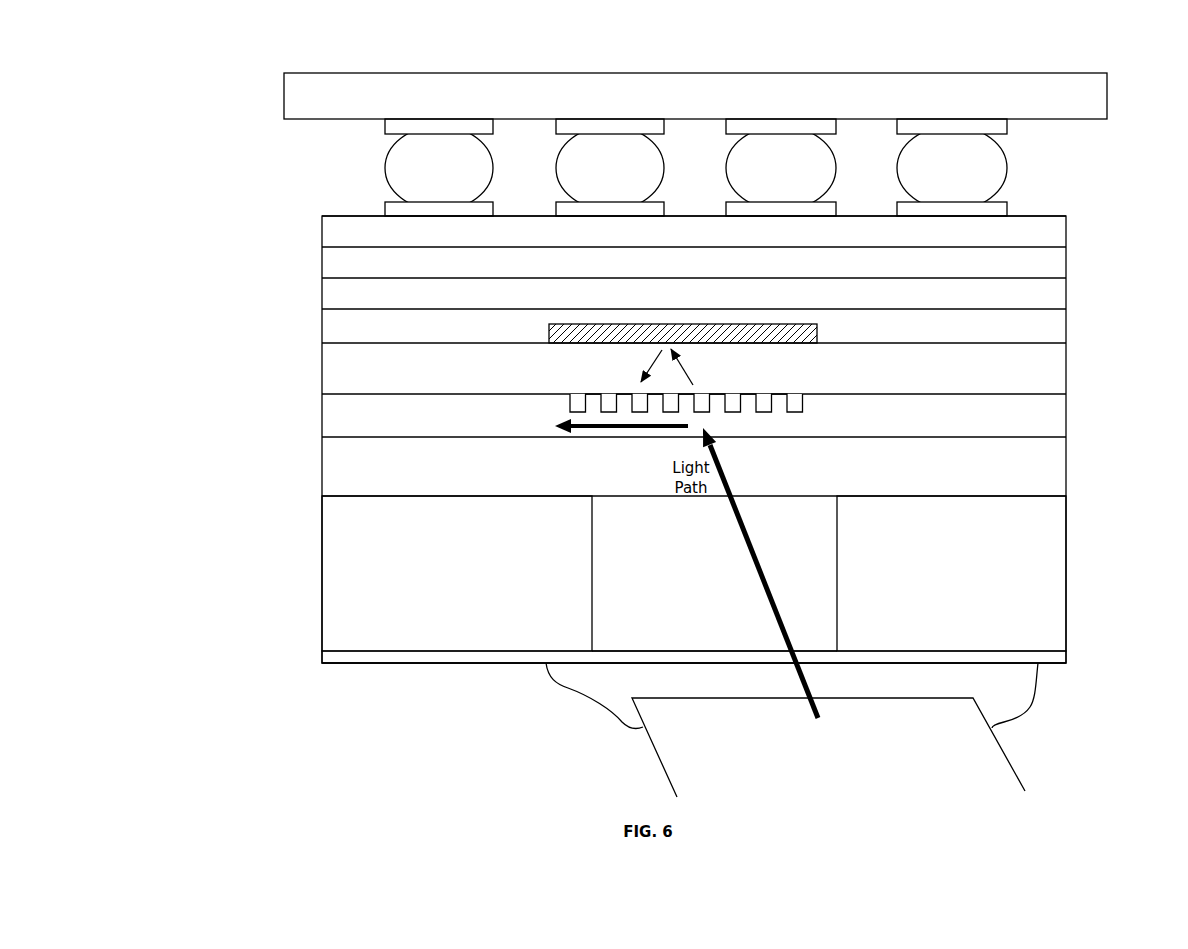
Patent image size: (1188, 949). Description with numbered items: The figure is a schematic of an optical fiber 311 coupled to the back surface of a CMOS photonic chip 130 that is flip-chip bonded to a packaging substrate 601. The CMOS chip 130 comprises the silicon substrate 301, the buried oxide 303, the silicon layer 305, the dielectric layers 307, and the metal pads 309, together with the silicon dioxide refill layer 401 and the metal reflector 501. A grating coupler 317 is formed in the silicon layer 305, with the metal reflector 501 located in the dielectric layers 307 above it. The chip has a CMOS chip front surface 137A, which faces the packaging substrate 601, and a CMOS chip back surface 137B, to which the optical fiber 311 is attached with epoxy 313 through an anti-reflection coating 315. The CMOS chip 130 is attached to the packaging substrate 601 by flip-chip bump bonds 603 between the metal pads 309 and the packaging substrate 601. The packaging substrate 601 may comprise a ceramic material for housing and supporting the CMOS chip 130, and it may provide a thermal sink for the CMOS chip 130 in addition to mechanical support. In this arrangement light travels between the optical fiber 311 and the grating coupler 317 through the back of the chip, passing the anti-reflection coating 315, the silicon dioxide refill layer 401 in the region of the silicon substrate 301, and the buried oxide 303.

The packaging substrate 601 is at (695, 96).
The metal pads 309 is at (1017, 204).
The flip-chip bump bonds 603 is at (370, 172).
The CMOS chip 130 is at (266, 291).
The CMOS chip front surface 137A is at (866, 214).
The dielectric layers 307 is at (1100, 392).
The metal reflector 501 is at (547, 327).
The silicon layer 305 is at (694, 425).
The grating coupler 317 is at (809, 406).
The buried oxide 303 is at (694, 477).
The silicon substrate 301 is at (694, 573).
The silicon dioxide refill layer 401 is at (714, 611).
The anti-reflection coating 315 is at (1056, 668).
The CMOS chip back surface 137B is at (453, 675).
The epoxy 313 is at (792, 695).
The optical fiber 311 is at (828, 747).